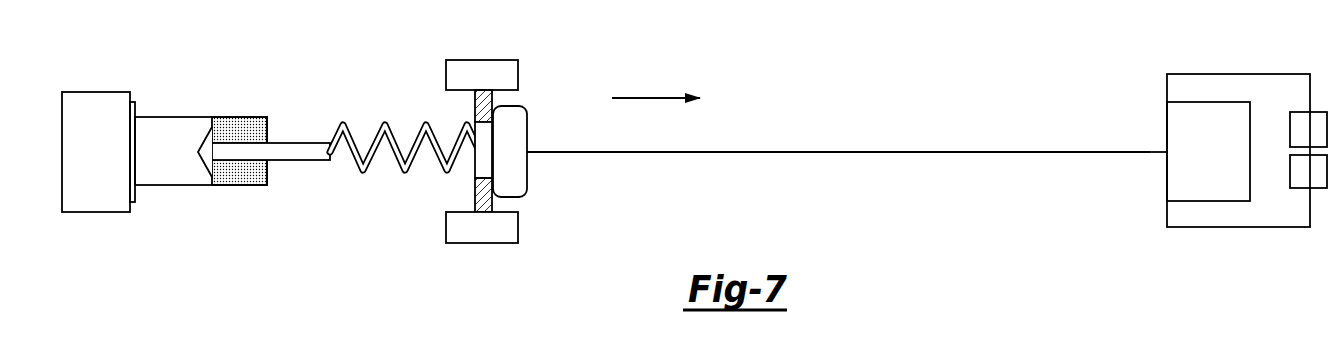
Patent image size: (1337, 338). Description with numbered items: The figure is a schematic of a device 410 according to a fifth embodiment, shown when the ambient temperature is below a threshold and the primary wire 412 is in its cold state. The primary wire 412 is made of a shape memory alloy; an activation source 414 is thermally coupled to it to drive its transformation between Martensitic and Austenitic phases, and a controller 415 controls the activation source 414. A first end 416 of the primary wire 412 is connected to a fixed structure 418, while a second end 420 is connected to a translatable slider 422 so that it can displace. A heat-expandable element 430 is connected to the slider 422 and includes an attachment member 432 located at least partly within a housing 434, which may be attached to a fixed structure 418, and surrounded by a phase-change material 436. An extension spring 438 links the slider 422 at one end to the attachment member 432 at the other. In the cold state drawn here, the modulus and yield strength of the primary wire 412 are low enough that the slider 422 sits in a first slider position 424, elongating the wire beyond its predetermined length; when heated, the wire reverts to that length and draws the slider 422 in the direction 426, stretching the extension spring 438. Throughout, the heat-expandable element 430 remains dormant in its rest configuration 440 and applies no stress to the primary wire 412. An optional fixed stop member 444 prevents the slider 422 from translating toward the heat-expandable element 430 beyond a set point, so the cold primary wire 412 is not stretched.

The device 410 is at (948, 58).
The primary wire 412 is at (868, 150).
The activation source 414 is at (1316, 145).
The controller 415 is at (1316, 186).
The first end 416 is at (1167, 150).
The fixed structure 418 is at (107, 161).
The second end 420 is at (528, 150).
The translatable slider 422 is at (524, 196).
The first slider position 424 is at (526, 177).
The direction 426 is at (656, 85).
The heat-expandable element 430 is at (205, 72).
The attachment member 432 is at (293, 143).
The housing 434 is at (165, 185).
The phase-change material 436 is at (240, 177).
The extension spring 438 is at (385, 125).
The rest configuration 440 is at (167, 117).
The fixed stop member 444 is at (475, 197).